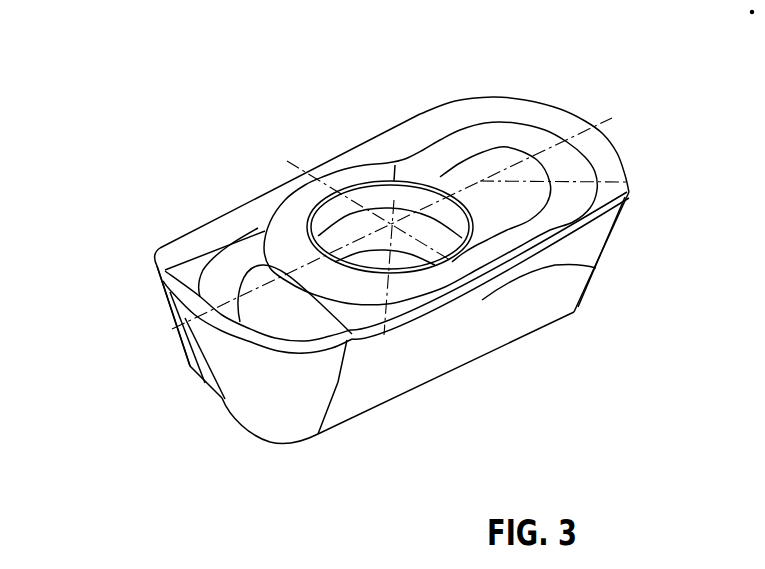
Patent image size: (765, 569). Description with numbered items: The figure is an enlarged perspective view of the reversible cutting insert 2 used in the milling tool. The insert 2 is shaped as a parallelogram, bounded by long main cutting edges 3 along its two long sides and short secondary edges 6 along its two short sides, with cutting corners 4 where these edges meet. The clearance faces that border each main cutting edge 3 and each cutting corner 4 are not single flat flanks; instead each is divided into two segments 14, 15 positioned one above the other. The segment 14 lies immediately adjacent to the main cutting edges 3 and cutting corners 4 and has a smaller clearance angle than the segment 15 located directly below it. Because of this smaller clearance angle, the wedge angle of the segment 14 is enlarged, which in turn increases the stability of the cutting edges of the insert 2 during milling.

The reversible cutting insert 2 is at (462, 164).
The main cutting edges 3 is at (330, 157).
The cutting corners 4 is at (522, 98).
The secondary edges 6 is at (618, 162).
The segment 14 is at (250, 364).
The segment 15 is at (272, 403).